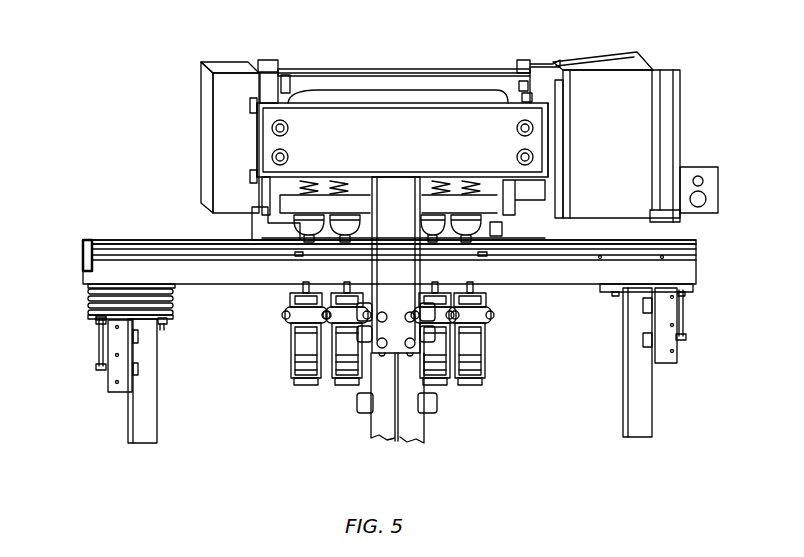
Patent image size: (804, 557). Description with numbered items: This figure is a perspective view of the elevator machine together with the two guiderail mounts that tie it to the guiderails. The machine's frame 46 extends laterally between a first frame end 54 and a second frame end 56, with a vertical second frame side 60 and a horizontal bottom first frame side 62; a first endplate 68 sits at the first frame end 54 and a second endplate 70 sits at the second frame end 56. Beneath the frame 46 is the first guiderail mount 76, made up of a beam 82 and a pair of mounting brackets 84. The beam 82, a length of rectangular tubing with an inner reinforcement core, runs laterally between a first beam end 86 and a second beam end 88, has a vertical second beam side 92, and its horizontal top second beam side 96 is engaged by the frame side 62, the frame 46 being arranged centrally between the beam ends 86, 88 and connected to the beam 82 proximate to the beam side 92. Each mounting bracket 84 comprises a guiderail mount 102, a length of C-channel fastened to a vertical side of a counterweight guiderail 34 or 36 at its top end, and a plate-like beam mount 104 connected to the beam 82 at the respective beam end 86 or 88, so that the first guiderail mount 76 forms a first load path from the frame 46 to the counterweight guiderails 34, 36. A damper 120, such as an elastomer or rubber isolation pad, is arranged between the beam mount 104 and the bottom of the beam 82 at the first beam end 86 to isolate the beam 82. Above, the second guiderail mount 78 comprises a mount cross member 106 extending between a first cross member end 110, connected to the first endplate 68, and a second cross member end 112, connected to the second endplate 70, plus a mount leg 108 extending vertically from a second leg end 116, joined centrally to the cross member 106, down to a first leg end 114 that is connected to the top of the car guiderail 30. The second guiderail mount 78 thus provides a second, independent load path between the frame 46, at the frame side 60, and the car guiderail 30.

The car guiderail 30 is at (425, 424).
The counterweight guiderail 34 is at (158, 419).
The counterweight guiderail 36 is at (652, 419).
The frame 46 is at (484, 85).
The first frame end 54 is at (264, 92).
The second frame end 56 is at (564, 88).
The second frame side 60 is at (270, 76).
The first frame side 62 is at (252, 237).
The first endplate 68 is at (289, 92).
The second endplate 70 is at (549, 64).
The first guiderail mount 76 is at (701, 267).
The second guiderail mount 78 is at (393, 94).
The beam 82 is at (113, 246).
The mounting bracket 84 is at (99, 339).
The first beam end 86 is at (84, 251).
The second beam end 88 is at (702, 240).
The second beam side 92 is at (186, 287).
The second beam side 96 is at (143, 243).
The guiderail mount 102 is at (108, 385).
The beam mount 104 is at (100, 319).
The mount cross member 106 is at (330, 90).
The mount leg 108 is at (433, 314).
The first cross member end 110 is at (256, 132).
The second cross member end 112 is at (549, 124).
The first leg end 114 is at (388, 360).
The second leg end 116 is at (385, 176).
The damper 120 is at (92, 297).